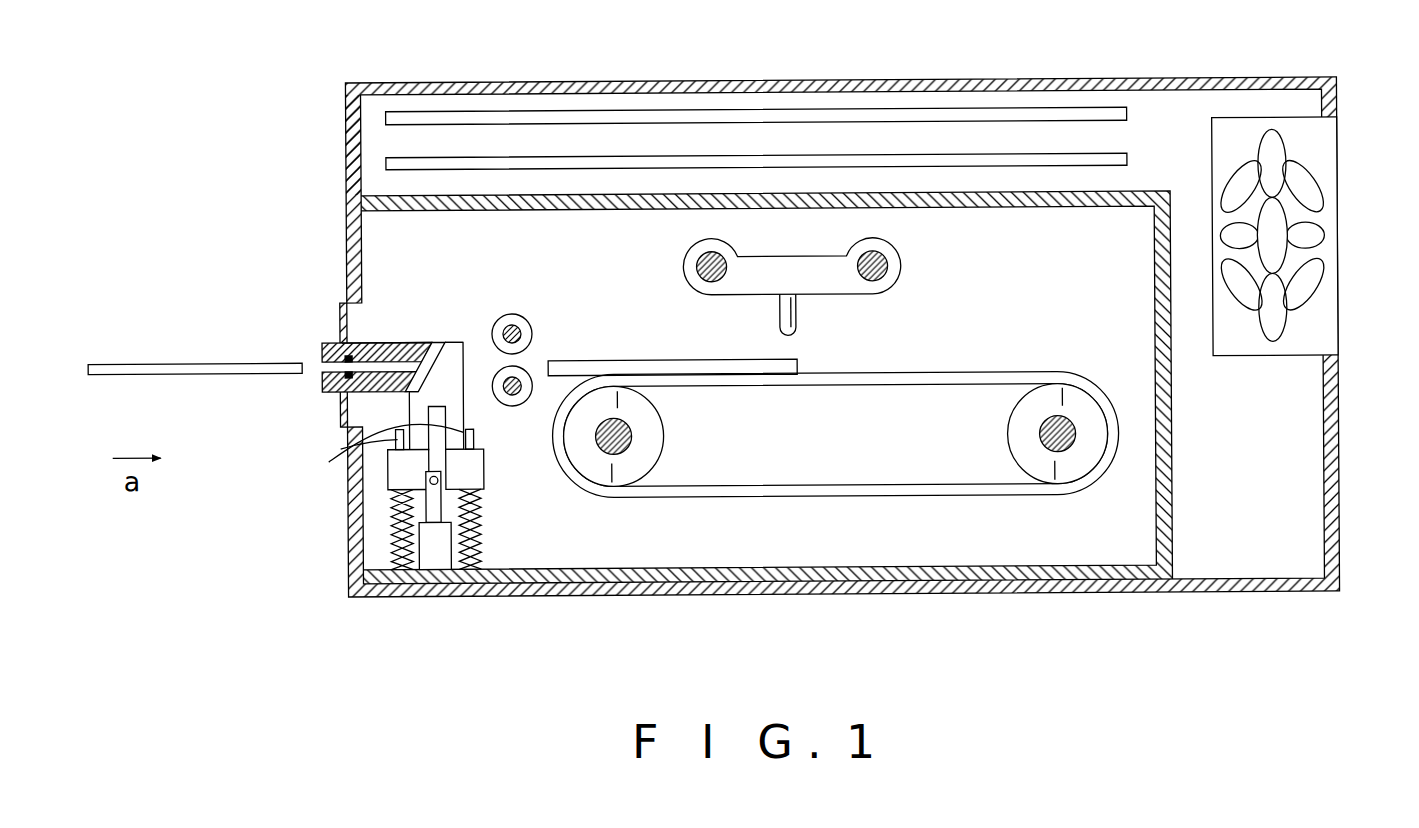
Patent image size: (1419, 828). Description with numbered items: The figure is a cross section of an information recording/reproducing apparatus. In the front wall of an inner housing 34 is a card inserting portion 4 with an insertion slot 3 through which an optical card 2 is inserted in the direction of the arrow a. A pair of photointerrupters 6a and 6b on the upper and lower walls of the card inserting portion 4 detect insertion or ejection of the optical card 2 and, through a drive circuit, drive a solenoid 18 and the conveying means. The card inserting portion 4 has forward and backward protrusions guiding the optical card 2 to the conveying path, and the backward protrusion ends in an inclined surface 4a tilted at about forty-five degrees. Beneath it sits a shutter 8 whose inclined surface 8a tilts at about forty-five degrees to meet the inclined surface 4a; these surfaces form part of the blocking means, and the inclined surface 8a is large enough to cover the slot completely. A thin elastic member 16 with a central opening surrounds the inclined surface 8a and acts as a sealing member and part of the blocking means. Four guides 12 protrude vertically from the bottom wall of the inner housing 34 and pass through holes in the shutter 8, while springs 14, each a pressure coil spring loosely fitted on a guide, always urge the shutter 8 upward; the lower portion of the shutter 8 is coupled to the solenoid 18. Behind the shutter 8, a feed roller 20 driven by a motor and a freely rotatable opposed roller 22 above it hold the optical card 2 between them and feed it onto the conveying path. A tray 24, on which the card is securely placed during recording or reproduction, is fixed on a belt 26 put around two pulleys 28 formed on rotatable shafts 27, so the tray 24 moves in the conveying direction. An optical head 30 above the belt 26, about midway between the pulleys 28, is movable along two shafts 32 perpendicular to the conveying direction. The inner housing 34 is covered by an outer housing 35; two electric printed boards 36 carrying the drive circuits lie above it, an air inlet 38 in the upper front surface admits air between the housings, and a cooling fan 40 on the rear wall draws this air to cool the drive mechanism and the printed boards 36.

The optical card 2 is at (193, 374).
The insertion slot 3 is at (280, 344).
The card inserting portion 4 is at (330, 343).
The inclined surface 4a is at (412, 343).
The photointerrupter 6a is at (334, 365).
The photointerrupter 6b is at (336, 388).
The shutter 8 is at (473, 466).
The inclined surface 8a is at (463, 345).
The guides 12 is at (342, 452).
The springs 14 is at (390, 535).
The elastic member 16 is at (440, 343).
The solenoid 18 is at (435, 570).
The feed roller 20 is at (511, 407).
The opposed roller 22 is at (533, 334).
The tray 24 is at (641, 362).
The belt 26 is at (778, 499).
The shafts 27 is at (631, 442).
The pulleys 28 is at (623, 479).
The optical head 30 is at (868, 297).
The shafts 32 is at (697, 264).
The inner housing 34 is at (1171, 441).
The outer housing 35 is at (1338, 439).
The electric printed board 36 is at (793, 155).
The air inlet 38 is at (347, 150).
The cooling fan 40 is at (1283, 238).